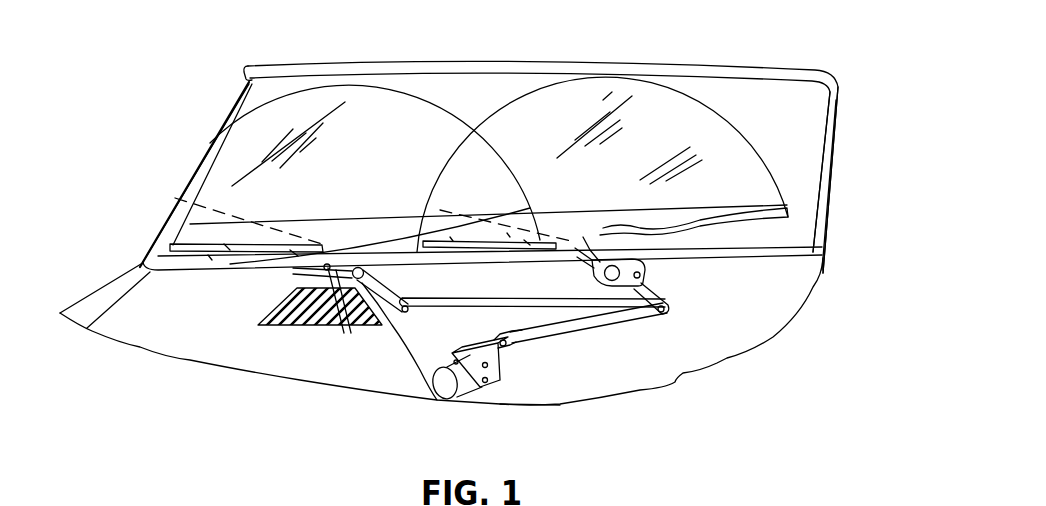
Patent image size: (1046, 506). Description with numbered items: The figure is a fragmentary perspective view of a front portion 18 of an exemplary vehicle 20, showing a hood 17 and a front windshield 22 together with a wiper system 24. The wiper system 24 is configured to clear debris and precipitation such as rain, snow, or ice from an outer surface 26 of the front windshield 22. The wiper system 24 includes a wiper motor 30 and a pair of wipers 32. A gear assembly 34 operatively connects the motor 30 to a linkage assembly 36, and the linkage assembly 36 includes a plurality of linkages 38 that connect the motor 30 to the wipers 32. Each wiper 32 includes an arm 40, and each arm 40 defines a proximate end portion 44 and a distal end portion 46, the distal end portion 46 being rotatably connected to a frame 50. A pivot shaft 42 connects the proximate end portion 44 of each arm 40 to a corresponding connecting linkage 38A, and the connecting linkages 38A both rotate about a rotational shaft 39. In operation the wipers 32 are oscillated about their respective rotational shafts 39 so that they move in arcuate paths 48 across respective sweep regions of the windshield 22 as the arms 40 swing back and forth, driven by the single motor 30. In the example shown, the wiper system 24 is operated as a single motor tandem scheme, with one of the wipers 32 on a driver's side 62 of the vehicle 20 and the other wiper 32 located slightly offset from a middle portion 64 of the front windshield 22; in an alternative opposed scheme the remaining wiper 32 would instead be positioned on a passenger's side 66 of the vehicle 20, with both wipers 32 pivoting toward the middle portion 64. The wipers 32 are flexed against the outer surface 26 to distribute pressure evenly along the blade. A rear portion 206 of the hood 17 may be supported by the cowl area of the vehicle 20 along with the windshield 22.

The hood 17 is at (196, 353).
The front portion 18 is at (98, 268).
The vehicle 20 is at (300, 40).
The front windshield 22 is at (810, 92).
The wiper system 24 is at (392, 88).
The outer surface 26 is at (641, 137).
The wiper motor 30 is at (463, 385).
The wipers 32 is at (185, 228).
The gear assembly 34 is at (503, 372).
The linkage assembly 36 is at (600, 352).
The linkages 38 is at (405, 288).
The connecting linkage 38A is at (347, 330).
The rotational shaft 39 is at (362, 266).
The arm 40 is at (298, 268).
The pivot shaft 42 is at (290, 327).
The proximate end portion 44 is at (293, 272).
The distal end portion 46 is at (208, 255).
The arcuate paths 48 is at (431, 100).
The frame 50 is at (228, 250).
The driver's side 62 is at (822, 120).
The middle portion 64 is at (527, 88).
The passenger's side 66 is at (240, 100).
The rear portion 206 is at (134, 286).